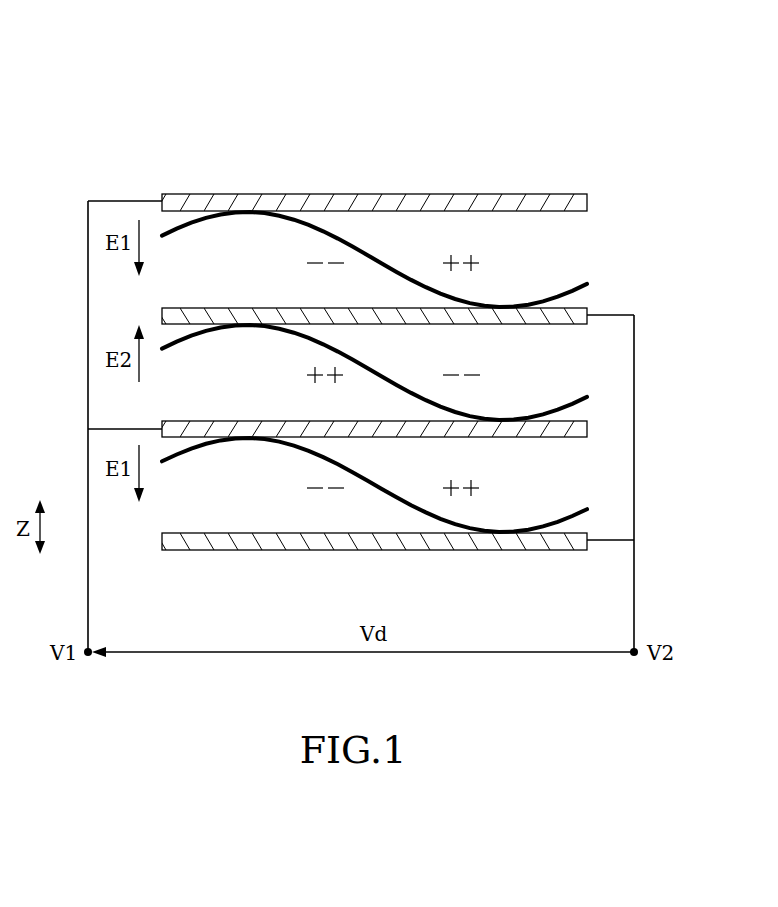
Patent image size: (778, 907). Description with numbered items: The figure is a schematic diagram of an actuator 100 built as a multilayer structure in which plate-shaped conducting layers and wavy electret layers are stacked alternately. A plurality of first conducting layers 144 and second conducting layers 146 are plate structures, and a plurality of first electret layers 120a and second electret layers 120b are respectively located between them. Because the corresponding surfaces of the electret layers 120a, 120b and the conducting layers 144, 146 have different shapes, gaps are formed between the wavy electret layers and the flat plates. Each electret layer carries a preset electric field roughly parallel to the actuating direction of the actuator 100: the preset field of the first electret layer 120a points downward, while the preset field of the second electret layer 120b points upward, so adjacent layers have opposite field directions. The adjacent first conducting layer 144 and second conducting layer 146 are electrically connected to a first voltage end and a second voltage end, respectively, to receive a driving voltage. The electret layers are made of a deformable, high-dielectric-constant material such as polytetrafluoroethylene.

The actuator 100 is at (112, 124).
The first conducting layer 144 is at (587, 197).
The second conducting layer 146 is at (587, 308).
The first electret layer 120a is at (588, 282).
The second electret layer 120b is at (568, 393).